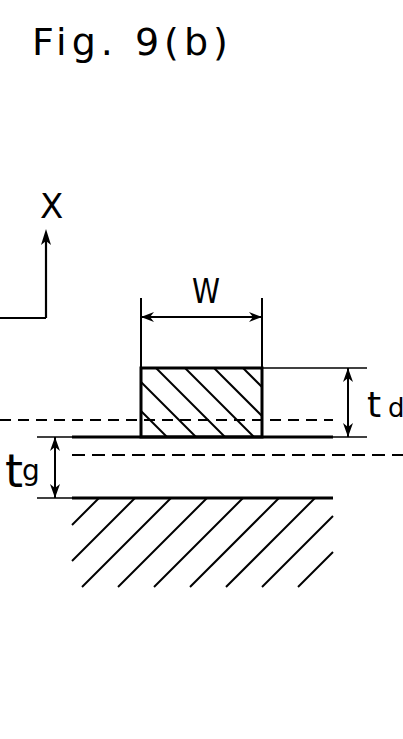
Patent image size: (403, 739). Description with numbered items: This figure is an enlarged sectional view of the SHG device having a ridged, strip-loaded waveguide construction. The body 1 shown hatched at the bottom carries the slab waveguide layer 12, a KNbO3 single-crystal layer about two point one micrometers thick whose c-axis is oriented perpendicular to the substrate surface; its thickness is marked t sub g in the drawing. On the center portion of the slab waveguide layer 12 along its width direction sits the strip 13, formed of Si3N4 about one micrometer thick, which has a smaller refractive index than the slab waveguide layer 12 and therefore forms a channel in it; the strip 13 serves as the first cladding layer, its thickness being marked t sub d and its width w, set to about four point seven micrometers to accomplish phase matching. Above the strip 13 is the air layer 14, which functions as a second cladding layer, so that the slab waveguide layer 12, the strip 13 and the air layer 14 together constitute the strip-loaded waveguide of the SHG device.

The substrate 1 is at (0, 596).
The slab waveguide layer 12 is at (308, 475).
The strip 13 is at (252, 396).
The air layer 14 is at (191, 240).